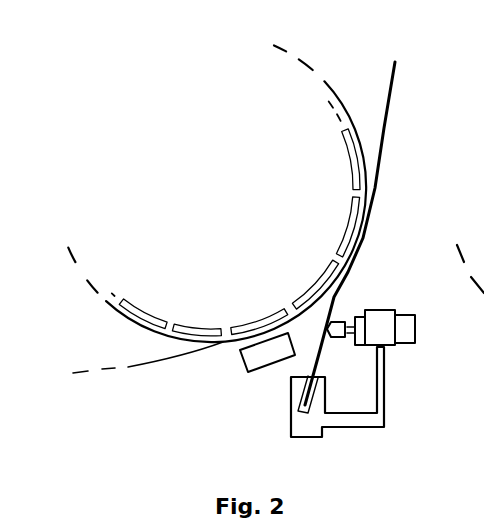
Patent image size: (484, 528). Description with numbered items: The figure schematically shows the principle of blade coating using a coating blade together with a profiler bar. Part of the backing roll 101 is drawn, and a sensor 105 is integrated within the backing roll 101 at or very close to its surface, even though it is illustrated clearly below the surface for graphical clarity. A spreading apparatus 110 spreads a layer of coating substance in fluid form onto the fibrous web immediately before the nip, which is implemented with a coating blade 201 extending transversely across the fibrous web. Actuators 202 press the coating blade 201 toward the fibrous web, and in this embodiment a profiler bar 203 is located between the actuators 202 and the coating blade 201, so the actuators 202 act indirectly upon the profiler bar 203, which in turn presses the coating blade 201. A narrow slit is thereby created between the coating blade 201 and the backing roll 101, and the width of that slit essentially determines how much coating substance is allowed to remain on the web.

The backing roll 101 is at (346, 104).
The sensor 105 is at (338, 292).
The spreading apparatus 110 is at (270, 372).
The coating blade 201 is at (325, 343).
The actuators 202 is at (405, 345).
The profiler bar 203 is at (340, 320).